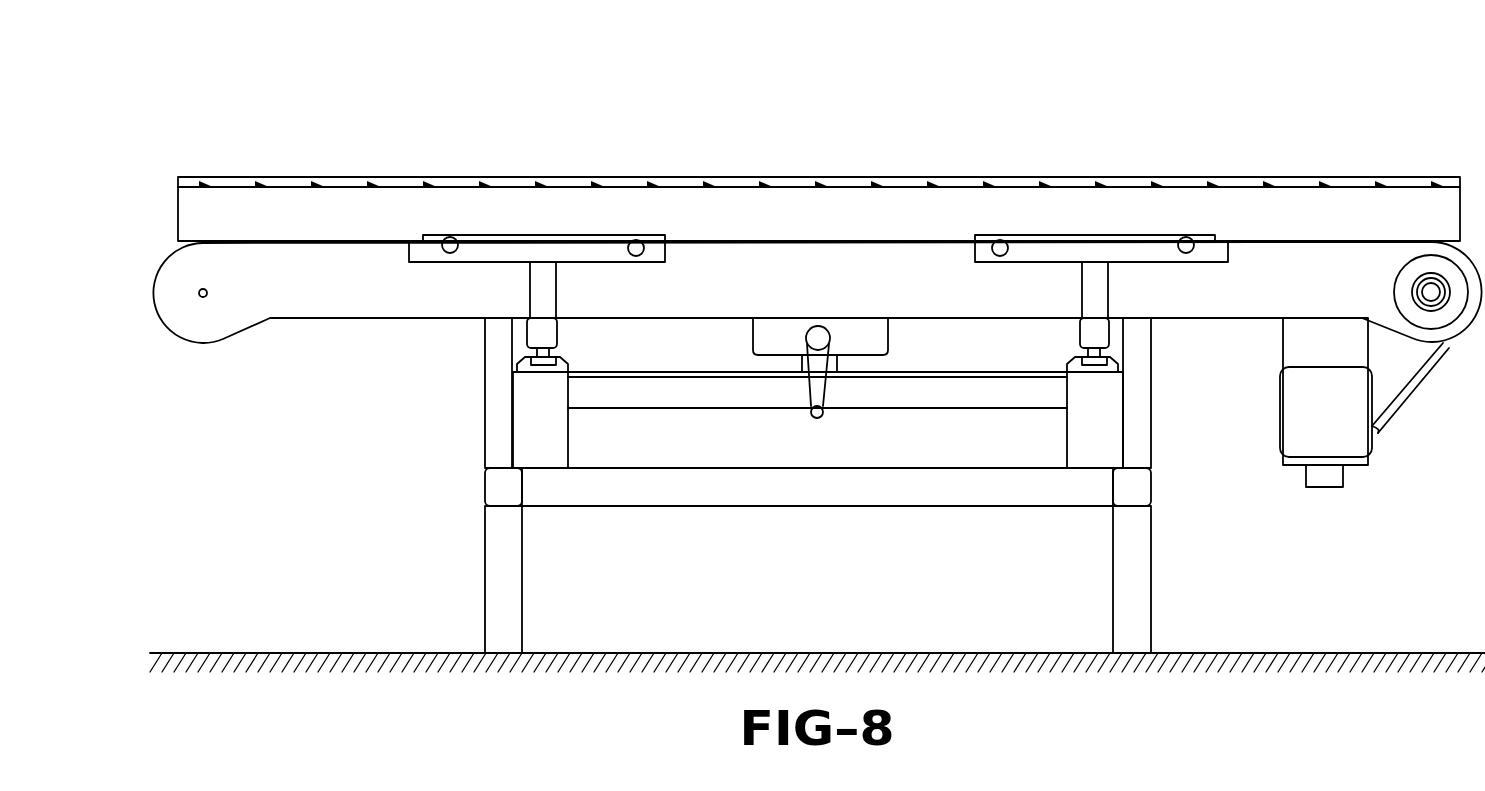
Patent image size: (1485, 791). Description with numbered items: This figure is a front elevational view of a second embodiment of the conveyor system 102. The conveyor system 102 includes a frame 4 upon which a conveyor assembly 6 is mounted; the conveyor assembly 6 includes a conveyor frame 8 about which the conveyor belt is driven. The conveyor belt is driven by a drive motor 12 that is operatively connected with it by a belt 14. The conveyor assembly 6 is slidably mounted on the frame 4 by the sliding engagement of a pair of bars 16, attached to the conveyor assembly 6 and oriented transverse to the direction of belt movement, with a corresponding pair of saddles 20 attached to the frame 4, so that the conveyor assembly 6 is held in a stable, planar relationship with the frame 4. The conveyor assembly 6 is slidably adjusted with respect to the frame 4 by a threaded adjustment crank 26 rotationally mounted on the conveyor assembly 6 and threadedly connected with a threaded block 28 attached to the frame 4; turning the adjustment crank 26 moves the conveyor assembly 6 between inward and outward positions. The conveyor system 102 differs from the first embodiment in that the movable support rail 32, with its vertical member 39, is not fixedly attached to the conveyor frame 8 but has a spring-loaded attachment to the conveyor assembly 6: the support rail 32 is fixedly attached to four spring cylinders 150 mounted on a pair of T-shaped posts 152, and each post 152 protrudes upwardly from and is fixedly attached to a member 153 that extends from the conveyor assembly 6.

The frame 4 is at (486, 556).
The conveyor assembly 6 is at (733, 177).
The conveyor frame 8 is at (352, 322).
The drive motor 12 is at (1300, 410).
The belt 14 is at (1405, 395).
The bars 16 is at (545, 350).
The saddles 20 is at (520, 360).
The threaded adjustment crank 26 is at (823, 388).
The threaded block 28 is at (797, 362).
The movable support rail 32 is at (460, 196).
The vertical member 39 is at (515, 212).
The conveyor system 102 is at (737, 98).
The spring cylinders 150 is at (451, 238).
The T-shaped posts 152 is at (550, 245).
The member 153 is at (552, 330).